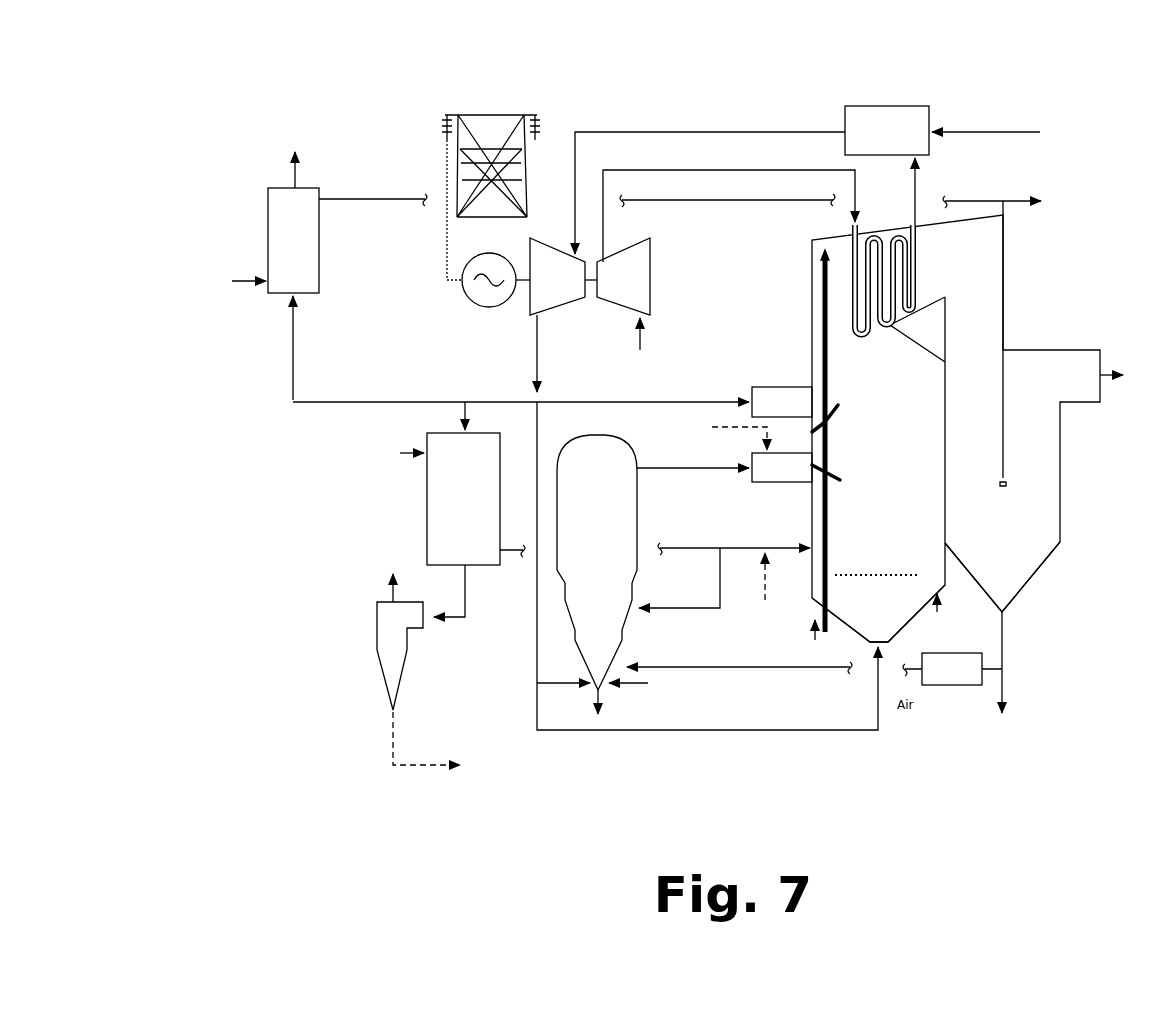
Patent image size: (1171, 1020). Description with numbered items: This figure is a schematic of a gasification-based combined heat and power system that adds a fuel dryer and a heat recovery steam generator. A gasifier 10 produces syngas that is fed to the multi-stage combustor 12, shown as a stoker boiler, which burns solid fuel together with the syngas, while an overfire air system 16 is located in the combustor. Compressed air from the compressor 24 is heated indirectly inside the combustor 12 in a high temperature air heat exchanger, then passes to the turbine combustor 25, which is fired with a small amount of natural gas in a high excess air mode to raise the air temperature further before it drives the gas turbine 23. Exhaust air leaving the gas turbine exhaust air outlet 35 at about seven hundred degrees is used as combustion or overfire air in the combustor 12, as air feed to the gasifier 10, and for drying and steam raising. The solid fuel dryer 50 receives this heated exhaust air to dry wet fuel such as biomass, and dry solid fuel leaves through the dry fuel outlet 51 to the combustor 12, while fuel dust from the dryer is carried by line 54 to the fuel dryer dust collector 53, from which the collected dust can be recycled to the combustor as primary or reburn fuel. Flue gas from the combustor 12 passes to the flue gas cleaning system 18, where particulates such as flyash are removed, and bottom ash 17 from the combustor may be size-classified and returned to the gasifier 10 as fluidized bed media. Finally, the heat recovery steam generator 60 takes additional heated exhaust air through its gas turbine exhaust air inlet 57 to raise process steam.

The gasifier 10 is at (575, 630).
The multi-stage combustor 12 is at (945, 355).
The overfire air system 16 is at (770, 387).
The bottom ash 17 is at (815, 612).
The flue gas cleaning system 18 is at (1040, 567).
The gas turbine 23 is at (528, 302).
The compressor 24 is at (652, 253).
The turbine combustor 25 is at (880, 103).
The gas turbine exhaust air outlet 35 is at (557, 305).
The solid fuel dryer 50 is at (427, 500).
The dry fuel outlet 51 is at (518, 556).
The fuel dryer dust collector 53 is at (377, 640).
The line 54 is at (455, 618).
The gas turbine exhaust air inlet 57 is at (283, 293).
The heat recovery steam generator 60 is at (268, 207).